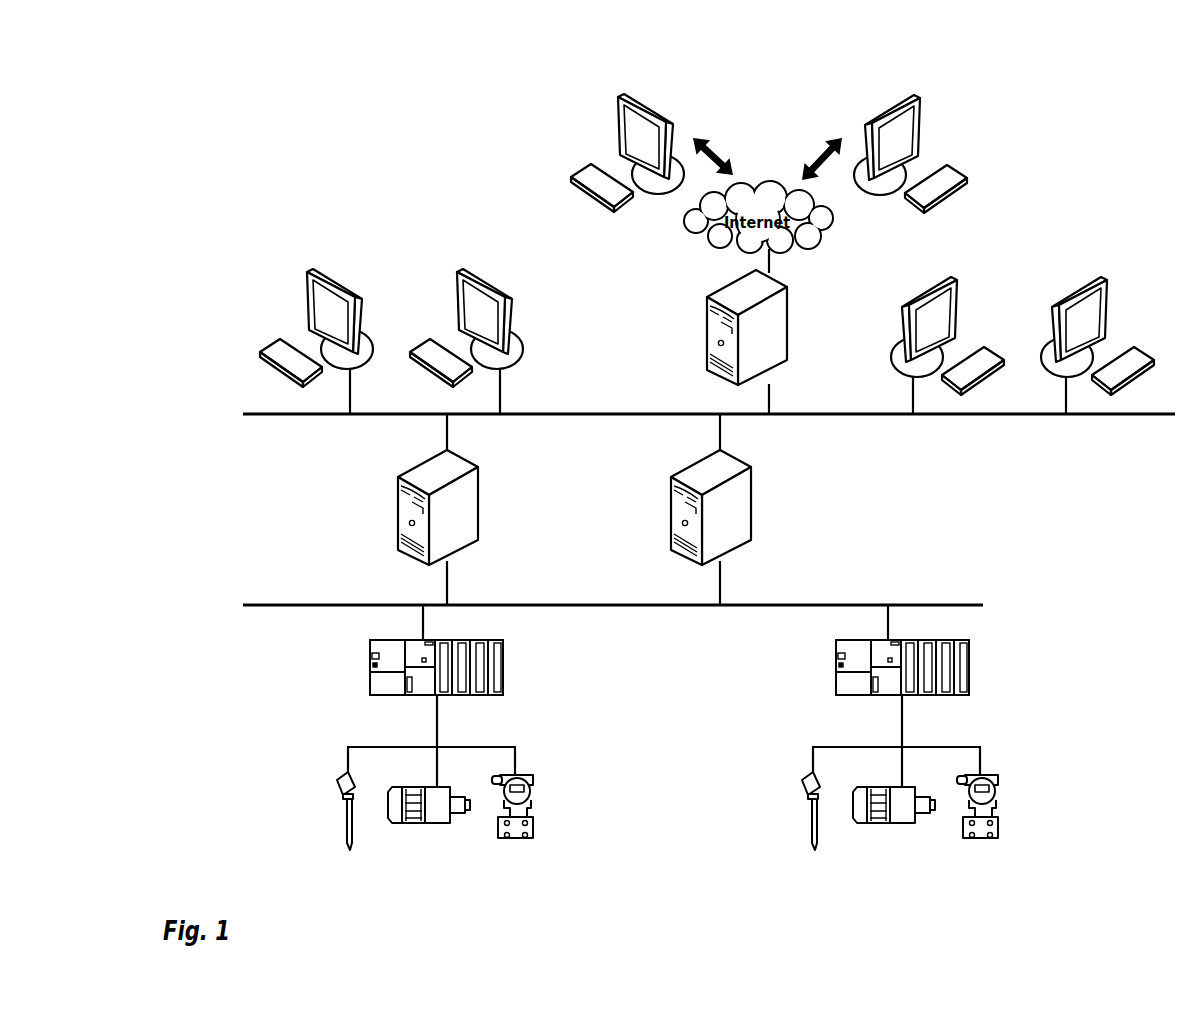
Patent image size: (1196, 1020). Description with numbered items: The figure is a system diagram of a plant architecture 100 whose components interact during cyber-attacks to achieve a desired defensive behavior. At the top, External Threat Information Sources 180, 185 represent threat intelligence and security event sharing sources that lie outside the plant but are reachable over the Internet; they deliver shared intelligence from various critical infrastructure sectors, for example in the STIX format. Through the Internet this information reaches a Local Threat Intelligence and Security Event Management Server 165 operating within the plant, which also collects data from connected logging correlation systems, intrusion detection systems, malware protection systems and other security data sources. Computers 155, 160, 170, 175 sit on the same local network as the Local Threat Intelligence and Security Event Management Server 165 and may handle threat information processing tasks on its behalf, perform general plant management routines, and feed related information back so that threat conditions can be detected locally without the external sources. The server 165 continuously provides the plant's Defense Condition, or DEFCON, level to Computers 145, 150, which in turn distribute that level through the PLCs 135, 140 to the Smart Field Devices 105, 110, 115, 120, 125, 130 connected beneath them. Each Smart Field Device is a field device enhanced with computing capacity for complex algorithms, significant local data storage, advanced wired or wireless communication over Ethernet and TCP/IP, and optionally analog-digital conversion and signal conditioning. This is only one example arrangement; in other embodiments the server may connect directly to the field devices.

The architecture 100 is at (418, 57).
The smart field device 105 is at (350, 850).
The smart field device 110 is at (452, 825).
The smart field device 115 is at (533, 838).
The smart field device 120 is at (817, 850).
The smart field device 125 is at (917, 825).
The smart field device 130 is at (998, 840).
The PLC 135 is at (505, 697).
The PLC 140 is at (972, 697).
The computer 145 is at (480, 540).
The computer 150 is at (753, 540).
The computer 155 is at (348, 285).
The computer 160 is at (498, 285).
The local threat intelligence and security event management server 165 is at (787, 333).
The computer 170 is at (925, 288).
The computer 175 is at (1073, 288).
The external threat information source 180 is at (665, 112).
The external threat information source 185 is at (875, 113).